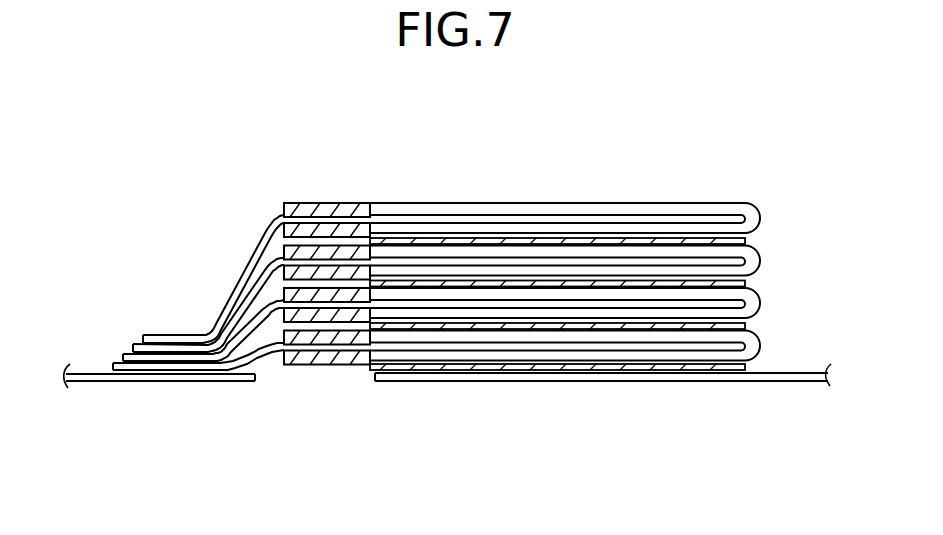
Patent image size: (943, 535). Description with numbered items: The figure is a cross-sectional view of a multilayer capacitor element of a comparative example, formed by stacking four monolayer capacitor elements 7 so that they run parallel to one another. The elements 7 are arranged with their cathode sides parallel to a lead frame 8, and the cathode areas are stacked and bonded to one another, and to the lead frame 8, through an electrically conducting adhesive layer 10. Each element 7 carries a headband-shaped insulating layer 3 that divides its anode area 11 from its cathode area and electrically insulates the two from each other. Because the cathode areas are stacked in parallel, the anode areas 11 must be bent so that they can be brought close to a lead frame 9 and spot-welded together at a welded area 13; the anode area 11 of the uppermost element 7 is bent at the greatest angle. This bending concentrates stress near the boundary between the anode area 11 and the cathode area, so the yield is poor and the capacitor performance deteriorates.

The insulating layer 3 is at (320, 208).
The monolayer capacitor element 7 is at (768, 217).
The lead frame 8 is at (781, 377).
The lead frame 9 is at (97, 378).
The electrically conducting adhesive layer 10 is at (458, 371).
The anode area 11 is at (176, 346).
The welded area 13 is at (188, 352).